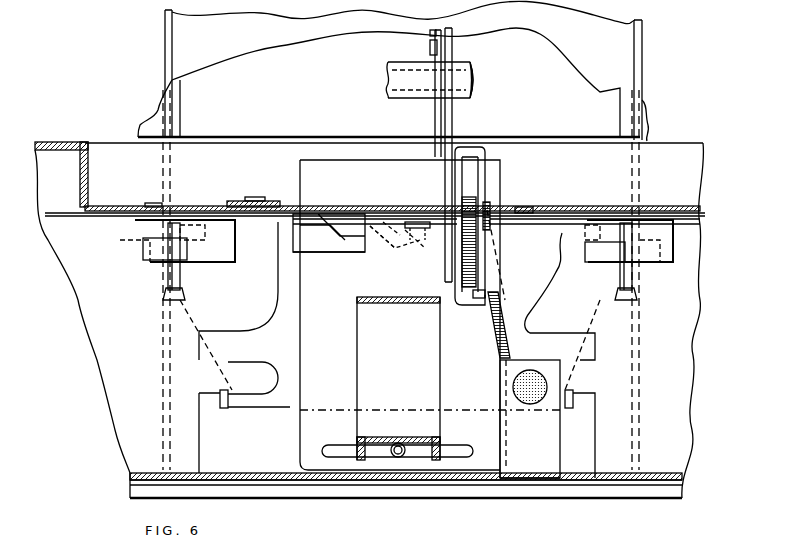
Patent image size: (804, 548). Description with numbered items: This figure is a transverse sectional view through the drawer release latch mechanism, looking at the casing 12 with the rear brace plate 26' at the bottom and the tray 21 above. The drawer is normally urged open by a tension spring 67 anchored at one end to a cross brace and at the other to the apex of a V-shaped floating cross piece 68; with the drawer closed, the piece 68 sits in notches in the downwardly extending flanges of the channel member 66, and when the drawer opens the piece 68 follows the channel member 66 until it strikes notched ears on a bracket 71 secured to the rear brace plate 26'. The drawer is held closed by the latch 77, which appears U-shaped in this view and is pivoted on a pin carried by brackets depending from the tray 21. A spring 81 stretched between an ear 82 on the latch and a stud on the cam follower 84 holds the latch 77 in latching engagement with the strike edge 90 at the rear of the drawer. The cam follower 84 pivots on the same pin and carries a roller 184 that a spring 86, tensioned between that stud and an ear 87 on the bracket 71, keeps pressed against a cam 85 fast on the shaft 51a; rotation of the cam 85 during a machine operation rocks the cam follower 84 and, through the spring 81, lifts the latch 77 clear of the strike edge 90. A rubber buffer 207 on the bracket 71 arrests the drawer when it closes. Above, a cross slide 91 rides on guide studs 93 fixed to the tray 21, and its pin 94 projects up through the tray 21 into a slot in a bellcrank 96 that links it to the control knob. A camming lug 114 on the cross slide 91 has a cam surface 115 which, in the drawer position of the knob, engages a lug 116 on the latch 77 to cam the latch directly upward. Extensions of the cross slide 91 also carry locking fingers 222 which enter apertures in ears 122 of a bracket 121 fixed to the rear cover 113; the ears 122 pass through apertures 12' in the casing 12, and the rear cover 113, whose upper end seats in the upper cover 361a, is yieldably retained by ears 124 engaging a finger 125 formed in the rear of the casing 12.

The roller 184 is at (430, 33).
The cam 85 is at (430, 47).
The shaft 51a is at (476, 78).
The cam follower 84 is at (455, 112).
The latch 77 is at (470, 150).
The rear cover 113 is at (642, 78).
The upper cover 361a is at (648, 108).
The guide studs 93 is at (153, 203).
The bellcrank 96 is at (238, 201).
The pin 94 is at (257, 197).
The cam surface 115 is at (340, 236).
The cross slide 91 is at (400, 219).
The tray 21 is at (680, 213).
The camming lug 114 is at (325, 252).
The lug 116 is at (398, 250).
The strike edge 90 is at (490, 236).
The spring 81 is at (478, 268).
The ear 82 is at (478, 303).
The spring 86 is at (498, 342).
The ear 87 is at (538, 360).
The rubber buffer 207 is at (513, 387).
The finger 125 is at (262, 372).
The ears 124 is at (222, 408).
The bracket 121 is at (282, 408).
The floating cross piece 68 is at (333, 445).
The tension spring 67 is at (396, 437).
The channel member 66 is at (435, 437).
The bracket 71 is at (510, 450).
The locking fingers 222 is at (150, 255).
The ears 122 is at (168, 284).
The apertures 12' is at (392, 298).
The casing 12 is at (697, 320).
The rear brace plate 26' is at (422, 492).